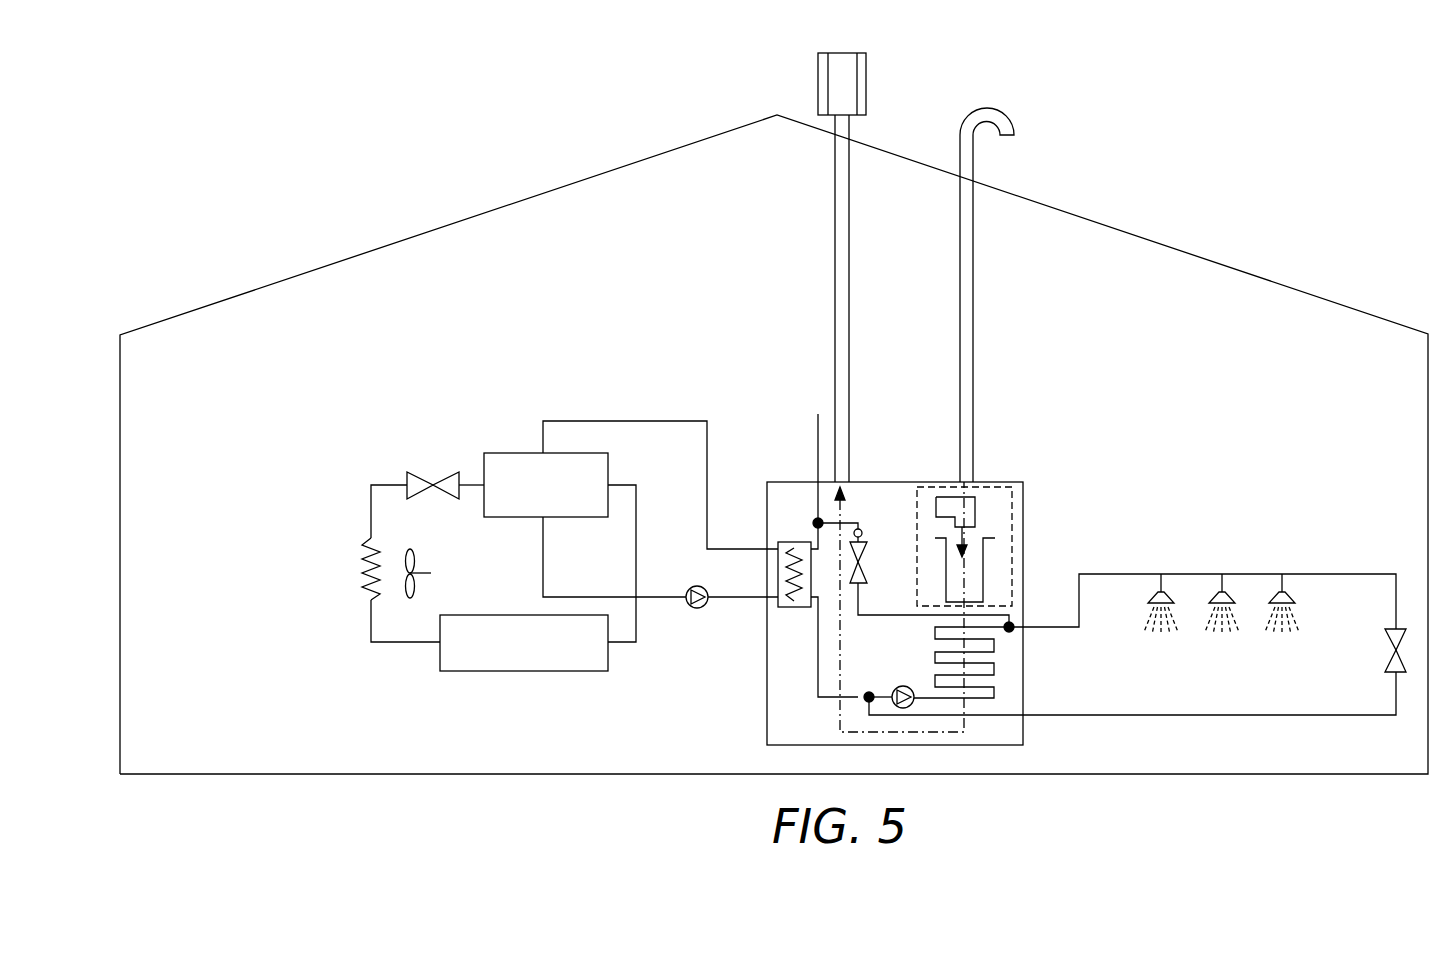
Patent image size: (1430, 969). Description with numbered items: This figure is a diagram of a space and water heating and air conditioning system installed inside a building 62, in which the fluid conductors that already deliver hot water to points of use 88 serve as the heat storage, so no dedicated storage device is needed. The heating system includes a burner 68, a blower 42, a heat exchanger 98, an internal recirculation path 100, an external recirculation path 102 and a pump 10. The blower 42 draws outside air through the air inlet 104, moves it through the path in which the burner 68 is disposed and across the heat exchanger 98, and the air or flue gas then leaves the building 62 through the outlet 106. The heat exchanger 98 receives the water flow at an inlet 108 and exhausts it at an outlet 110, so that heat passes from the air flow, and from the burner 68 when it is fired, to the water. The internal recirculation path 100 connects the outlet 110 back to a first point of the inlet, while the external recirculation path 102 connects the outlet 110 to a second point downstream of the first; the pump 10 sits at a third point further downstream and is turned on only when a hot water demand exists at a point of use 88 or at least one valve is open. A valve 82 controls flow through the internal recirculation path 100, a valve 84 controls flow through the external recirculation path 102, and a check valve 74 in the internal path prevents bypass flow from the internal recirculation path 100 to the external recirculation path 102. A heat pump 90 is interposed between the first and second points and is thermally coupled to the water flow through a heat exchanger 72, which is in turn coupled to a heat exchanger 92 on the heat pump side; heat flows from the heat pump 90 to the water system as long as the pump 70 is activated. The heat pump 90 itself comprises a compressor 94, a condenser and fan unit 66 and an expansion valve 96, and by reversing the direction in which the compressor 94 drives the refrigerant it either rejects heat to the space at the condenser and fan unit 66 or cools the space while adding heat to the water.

The building 62 is at (1306, 293).
The outlet 106 is at (835, 309).
The air inlet 104 is at (973, 414).
The inlet 108 is at (814, 519).
The pump 70 is at (690, 591).
The heat pump 90 is at (371, 497).
The expansion valve 96 is at (440, 486).
The condenser and fan unit 66 is at (362, 592).
The heat exchanger 92 is at (505, 452).
The compressor 94 is at (485, 671).
The heat exchanger 72 is at (797, 542).
The internal recirculation path 100 is at (852, 522).
The check valve 74 is at (862, 531).
The valve 82 is at (867, 568).
The burner 68 is at (995, 538).
The blower 42 is at (975, 506).
The heat exchanger 98 is at (935, 656).
The pump 10 is at (896, 691).
The outlet 110 is at (1012, 631).
The external recirculation path 102 is at (1264, 694).
The valve 84 is at (1386, 655).
The point of use 88 is at (1301, 596).